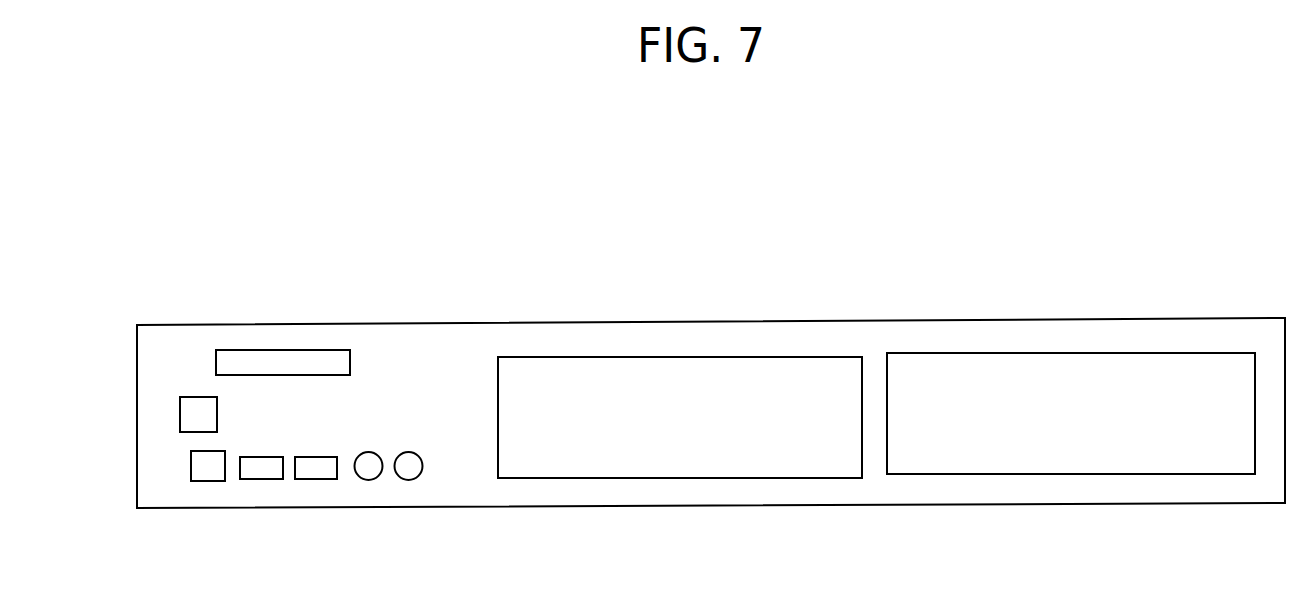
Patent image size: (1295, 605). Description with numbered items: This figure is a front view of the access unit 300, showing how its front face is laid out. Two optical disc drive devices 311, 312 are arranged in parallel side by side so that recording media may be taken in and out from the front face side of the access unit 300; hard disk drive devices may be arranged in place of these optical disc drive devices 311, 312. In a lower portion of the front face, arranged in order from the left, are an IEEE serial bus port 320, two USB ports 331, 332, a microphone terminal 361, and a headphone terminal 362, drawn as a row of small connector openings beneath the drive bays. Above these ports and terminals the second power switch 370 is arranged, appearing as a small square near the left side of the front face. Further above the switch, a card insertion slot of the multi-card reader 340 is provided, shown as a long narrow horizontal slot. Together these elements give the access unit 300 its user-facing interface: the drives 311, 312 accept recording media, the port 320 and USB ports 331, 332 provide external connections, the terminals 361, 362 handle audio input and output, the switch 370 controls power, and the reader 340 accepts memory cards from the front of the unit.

The access unit 300 is at (716, 268).
The optical disc drive device 311 is at (623, 382).
The optical disc drive device 312 is at (1041, 378).
The IEEE 1394 port 320 is at (203, 481).
The USB port 331 is at (265, 480).
The USB port 332 is at (315, 480).
The multi-card reader 340 is at (287, 350).
The microphone terminal 361 is at (369, 480).
The headphone terminal 362 is at (410, 480).
The second power switch 370 is at (180, 415).